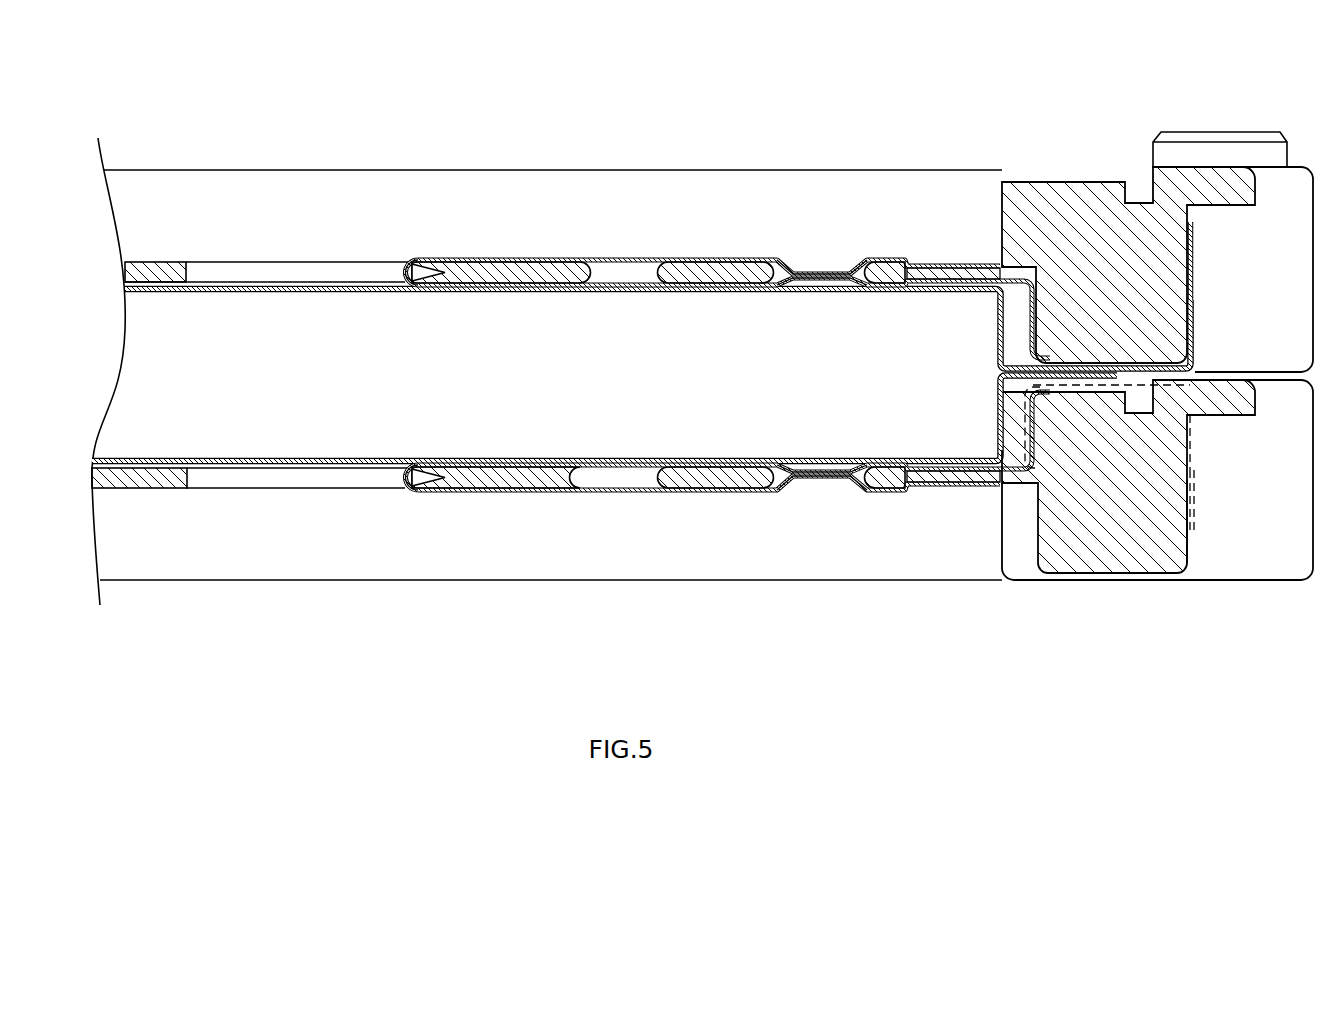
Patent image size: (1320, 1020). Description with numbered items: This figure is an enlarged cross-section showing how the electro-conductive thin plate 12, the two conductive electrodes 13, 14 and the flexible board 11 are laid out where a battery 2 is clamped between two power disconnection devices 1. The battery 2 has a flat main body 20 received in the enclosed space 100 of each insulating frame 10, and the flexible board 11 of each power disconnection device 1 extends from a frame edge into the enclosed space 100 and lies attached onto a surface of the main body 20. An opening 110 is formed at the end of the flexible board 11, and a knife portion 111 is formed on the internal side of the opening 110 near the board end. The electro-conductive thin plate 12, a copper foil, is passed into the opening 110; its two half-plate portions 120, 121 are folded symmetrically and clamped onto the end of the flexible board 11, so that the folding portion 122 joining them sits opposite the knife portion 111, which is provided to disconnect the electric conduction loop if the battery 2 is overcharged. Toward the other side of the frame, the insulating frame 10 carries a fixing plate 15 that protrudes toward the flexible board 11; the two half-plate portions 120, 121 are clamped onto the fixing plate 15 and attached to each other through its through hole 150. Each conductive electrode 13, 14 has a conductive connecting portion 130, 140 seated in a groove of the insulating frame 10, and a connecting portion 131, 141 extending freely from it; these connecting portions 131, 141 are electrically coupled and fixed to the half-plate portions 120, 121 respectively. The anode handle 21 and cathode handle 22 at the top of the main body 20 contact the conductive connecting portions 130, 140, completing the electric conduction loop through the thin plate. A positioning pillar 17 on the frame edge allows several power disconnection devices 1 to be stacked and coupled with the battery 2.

The power disconnection device 1 is at (1137, 124).
The battery 2 is at (286, 282).
The insulating frame 10 is at (1054, 178).
The flexible board 11 is at (160, 262).
The electro-conductive thin plate 12 is at (623, 256).
The conductive electrode 13 is at (1197, 245).
The conductive electrode 14 is at (1198, 534).
The fixing plate 15 is at (890, 262).
The positioning pillar 17 is at (1238, 150).
The main body 20 is at (310, 425).
The anode handle 21 is at (1195, 340).
The cathode handle 22 is at (1195, 460).
The enclosed space 100 is at (272, 185).
The opening 110 is at (228, 272).
The knife portion 111 is at (428, 270).
The half-plate portion 120 is at (597, 262).
The half-plate portion 121 is at (700, 262).
The folding portion 122 is at (404, 270).
The conductive connecting portion 130 is at (1194, 292).
The connecting portion 131 is at (965, 266).
The conductive connecting portion 140 is at (1192, 510).
The connecting portion 141 is at (965, 485).
The through hole 150 is at (805, 270).